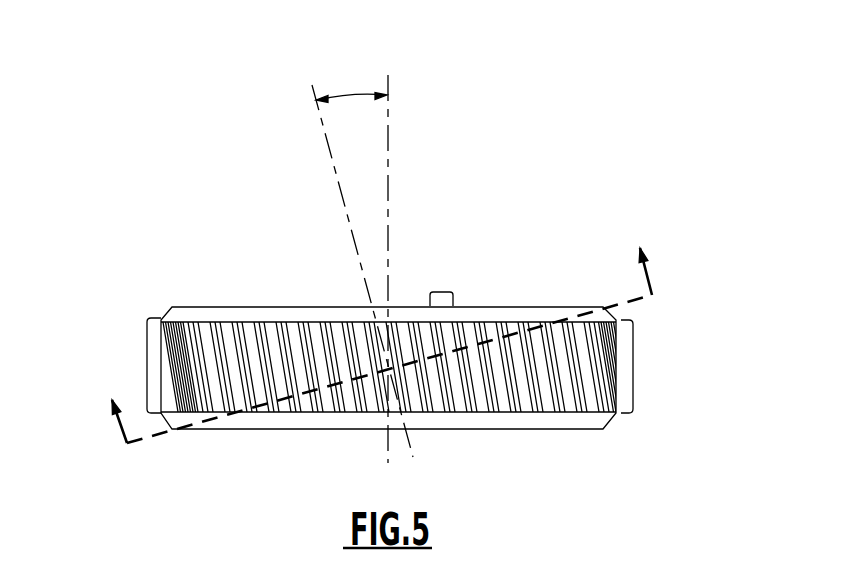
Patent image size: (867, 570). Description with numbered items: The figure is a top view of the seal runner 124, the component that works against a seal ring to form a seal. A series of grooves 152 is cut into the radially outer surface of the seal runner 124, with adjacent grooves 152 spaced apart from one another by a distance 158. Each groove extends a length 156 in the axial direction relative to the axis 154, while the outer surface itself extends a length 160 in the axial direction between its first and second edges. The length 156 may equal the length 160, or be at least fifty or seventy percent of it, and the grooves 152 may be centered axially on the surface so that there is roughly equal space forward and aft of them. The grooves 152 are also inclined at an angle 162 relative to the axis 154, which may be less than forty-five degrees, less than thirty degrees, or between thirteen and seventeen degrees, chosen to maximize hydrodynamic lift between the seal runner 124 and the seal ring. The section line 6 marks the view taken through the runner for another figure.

The seal runner 124 is at (508, 218).
The grooves 152 is at (330, 333).
The axis 154 is at (389, 153).
The length 156 is at (633, 365).
The distance 158 is at (440, 292).
The length 160 is at (147, 363).
The angle 162 is at (350, 93).
The section line 6- 6 is at (378, 329).